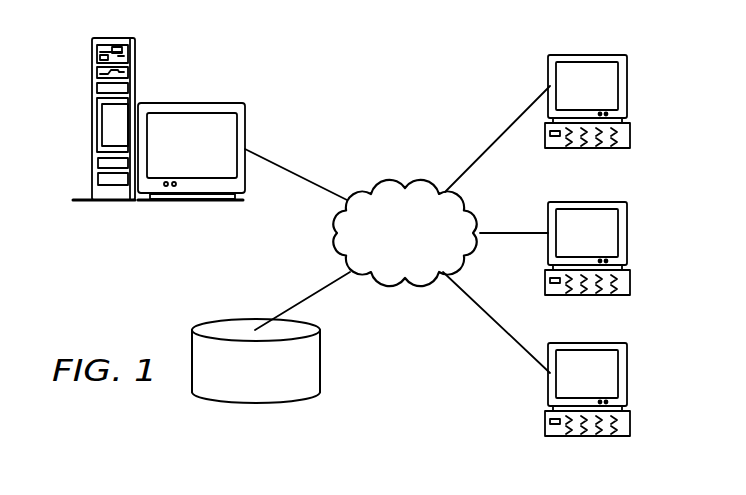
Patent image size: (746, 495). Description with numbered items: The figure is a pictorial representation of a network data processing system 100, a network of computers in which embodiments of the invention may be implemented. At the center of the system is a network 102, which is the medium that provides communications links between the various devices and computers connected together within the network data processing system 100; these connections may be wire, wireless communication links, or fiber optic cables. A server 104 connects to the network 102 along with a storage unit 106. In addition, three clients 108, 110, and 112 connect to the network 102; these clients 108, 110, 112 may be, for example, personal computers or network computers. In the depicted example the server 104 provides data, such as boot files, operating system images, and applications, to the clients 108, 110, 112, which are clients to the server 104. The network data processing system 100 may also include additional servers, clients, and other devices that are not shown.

The network data processing system 100 is at (452, 69).
The network 102 is at (376, 182).
The server 104 is at (90, 122).
The storage unit 106 is at (240, 405).
The client 108 is at (627, 88).
The client 110 is at (625, 235).
The client 112 is at (625, 375).